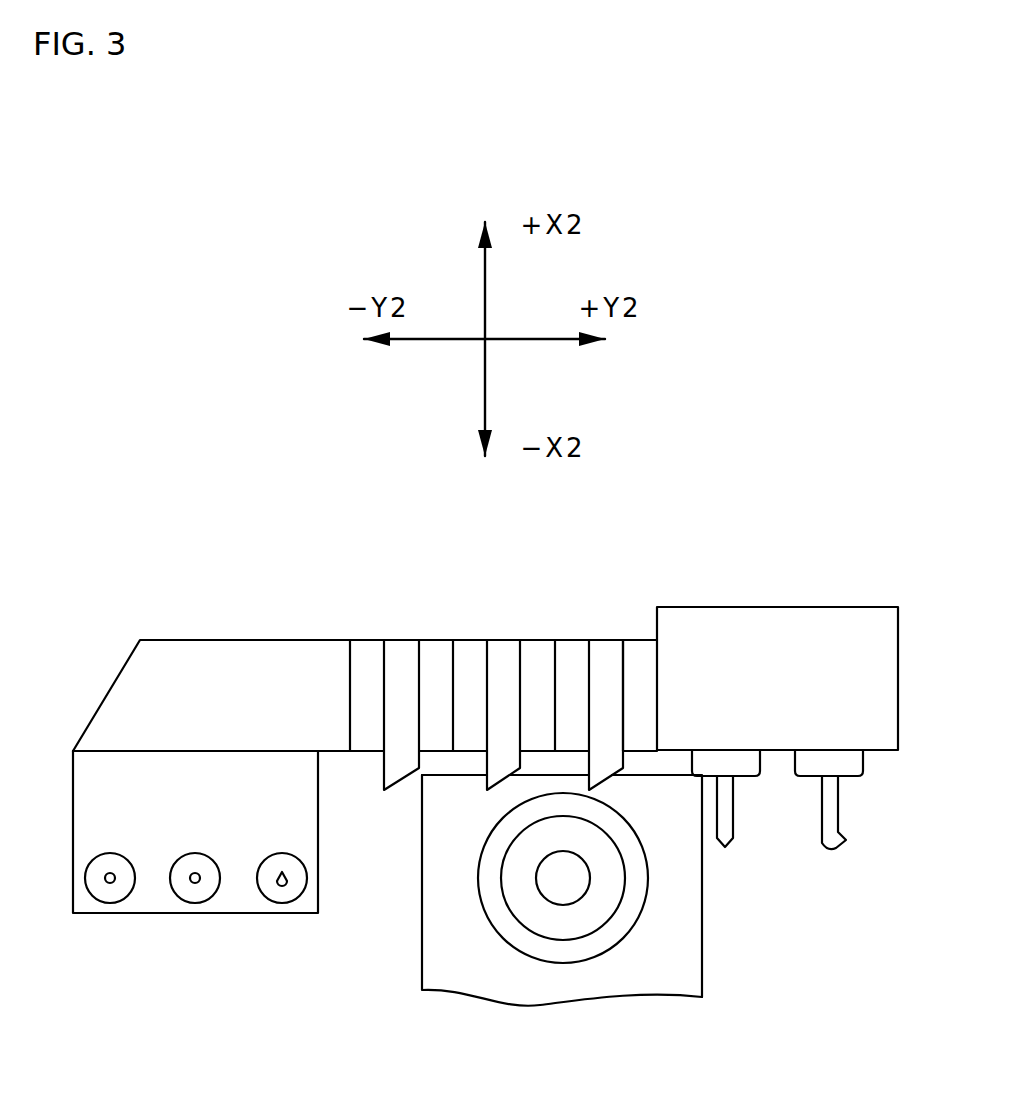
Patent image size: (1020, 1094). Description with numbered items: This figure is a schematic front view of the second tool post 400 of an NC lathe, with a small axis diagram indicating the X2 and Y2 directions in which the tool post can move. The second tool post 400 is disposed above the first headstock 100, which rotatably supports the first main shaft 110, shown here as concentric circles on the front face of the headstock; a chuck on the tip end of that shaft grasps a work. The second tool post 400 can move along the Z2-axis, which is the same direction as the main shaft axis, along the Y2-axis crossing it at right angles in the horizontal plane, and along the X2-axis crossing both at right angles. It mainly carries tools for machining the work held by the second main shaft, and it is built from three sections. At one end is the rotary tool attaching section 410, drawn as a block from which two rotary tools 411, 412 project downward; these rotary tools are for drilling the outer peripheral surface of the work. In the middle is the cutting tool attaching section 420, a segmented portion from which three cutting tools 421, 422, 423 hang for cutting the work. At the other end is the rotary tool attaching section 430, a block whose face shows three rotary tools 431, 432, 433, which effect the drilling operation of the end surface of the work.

The first headstock 100 is at (706, 938).
The first main shaft 110 is at (583, 920).
The second tool post 400 is at (135, 630).
The rotary tool attaching section 410 is at (800, 605).
The rotary tool 411 is at (736, 820).
The rotary tool 412 is at (840, 810).
The cutting tool attaching section 420 is at (372, 637).
The cutting tool 421 is at (398, 665).
The cutting tool 422 is at (502, 660).
The cutting tool 423 is at (610, 657).
The rotary tool attaching section 430 is at (197, 748).
The rotary tool 431 is at (110, 900).
The rotary tool 432 is at (193, 900).
The rotary tool 433 is at (280, 900).